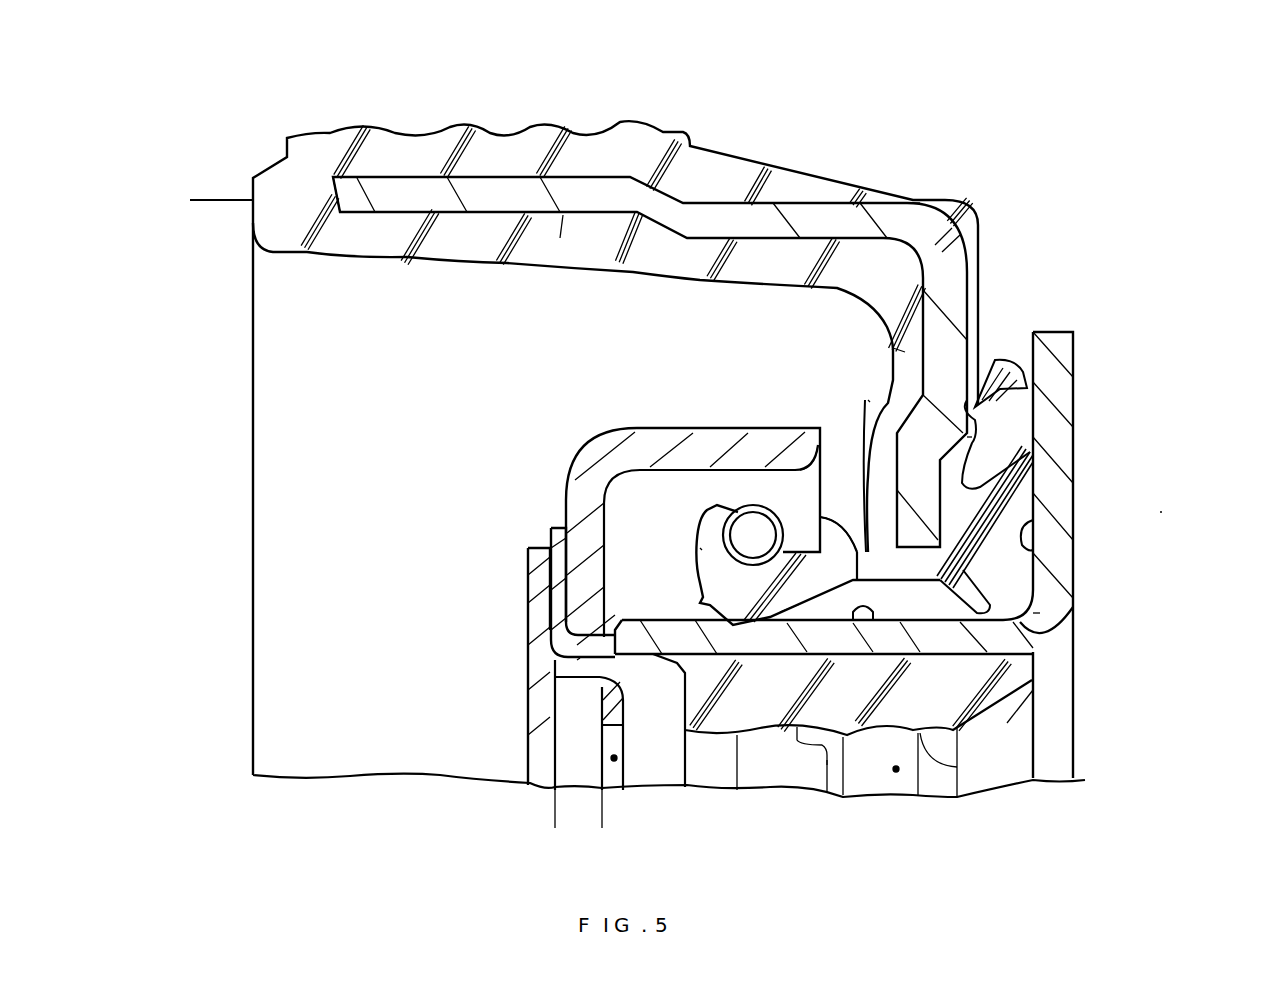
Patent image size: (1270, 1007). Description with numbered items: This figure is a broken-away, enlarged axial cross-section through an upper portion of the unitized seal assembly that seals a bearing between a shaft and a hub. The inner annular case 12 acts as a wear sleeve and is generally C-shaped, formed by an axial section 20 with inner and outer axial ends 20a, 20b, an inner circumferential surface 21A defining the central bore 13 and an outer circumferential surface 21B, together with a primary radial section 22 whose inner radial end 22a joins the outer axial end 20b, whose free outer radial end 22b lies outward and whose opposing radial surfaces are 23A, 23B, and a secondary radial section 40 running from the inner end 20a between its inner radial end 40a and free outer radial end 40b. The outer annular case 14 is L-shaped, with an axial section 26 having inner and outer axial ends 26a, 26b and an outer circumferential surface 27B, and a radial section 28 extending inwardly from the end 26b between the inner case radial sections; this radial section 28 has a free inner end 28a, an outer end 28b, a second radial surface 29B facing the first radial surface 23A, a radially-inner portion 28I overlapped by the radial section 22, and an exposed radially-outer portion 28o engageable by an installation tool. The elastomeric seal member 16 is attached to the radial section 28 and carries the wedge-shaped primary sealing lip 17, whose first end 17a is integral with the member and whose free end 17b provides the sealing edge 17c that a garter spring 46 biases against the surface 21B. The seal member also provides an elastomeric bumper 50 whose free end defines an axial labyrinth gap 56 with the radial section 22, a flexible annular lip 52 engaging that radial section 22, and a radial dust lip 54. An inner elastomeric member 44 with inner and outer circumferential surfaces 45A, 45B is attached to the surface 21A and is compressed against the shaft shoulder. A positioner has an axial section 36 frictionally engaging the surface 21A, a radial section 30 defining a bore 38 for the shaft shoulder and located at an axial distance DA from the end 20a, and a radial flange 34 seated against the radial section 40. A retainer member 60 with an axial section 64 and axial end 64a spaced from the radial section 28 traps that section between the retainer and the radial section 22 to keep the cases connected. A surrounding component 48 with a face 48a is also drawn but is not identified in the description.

The inner annular case 12 is at (1168, 512).
The central bore 13 is at (897, 772).
The outer annular case 14 is at (610, 76).
The annular elastomeric seal member 16 is at (861, 500).
The primary sealing lip 17 is at (708, 507).
The first end of primary sealing lip 17a is at (823, 518).
The second free end of primary sealing lip 17b is at (703, 555).
The inner circumferential sealing edge 17c is at (790, 622).
The axial section of inner case 20 is at (781, 660).
The inner axial end of inner case axial section 20a is at (580, 658).
The outer axial end of inner case axial section 20b is at (1035, 655).
The inner circumferential surface of inner case axial section 21A is at (827, 765).
The outer circumferential surface of inner case axial section 21B is at (853, 624).
The primary radial section of inner case 22 is at (1078, 470).
The inner radial end of primary radial section 22a is at (1062, 617).
The free outer radial end of primary radial section 22b is at (1076, 342).
The first radial surface of primary radial section 23A is at (1065, 540).
The second radial surface of primary radial section 23B is at (1078, 410).
The axial section of outer case 26 is at (522, 168).
The inner axial end of outer case axial section 26a is at (352, 214).
The outer axial end of outer case axial section 26b is at (905, 215).
The outer circumferential surface of outer case axial section 27B is at (712, 190).
The radial section of outer case 28 is at (960, 268).
The inner radial end of outer case radial section 28a is at (866, 520).
The outer radial end of outer case radial section 28b is at (945, 252).
The radially-outer portion of outer case radial section 28o is at (968, 290).
The radially-inner portion of outer case radial section 28I is at (970, 437).
The second radial surface of outer case radial section 29B is at (893, 343).
The radial section of positioner 30 is at (626, 706).
The radial flange of positioner 34 is at (526, 582).
The axial section of positioner 36 is at (573, 679).
The central bore of positioner 38 is at (616, 758).
The secondary radial section of inner case 40 is at (542, 520).
The inner radial end of secondary radial section 40a is at (578, 636).
The free outer radial end of secondary radial section 40b is at (562, 535).
The inner annular elastomeric member 44 is at (983, 710).
The inner circumferential surface of inner elastomeric member 45A is at (957, 767).
The outer circumferential surface of inner elastomeric member 45B is at (920, 622).
The garter spring 46 is at (754, 503).
The housing 48 is at (637, 124).
The housing face 48a is at (200, 208).
The annular elastomeric bumper 50 is at (1013, 348).
The annular elastomeric lip 52 is at (1030, 490).
The radial dust lip 54 is at (1002, 588).
The axial labyrinth gap 56 is at (1030, 388).
The annular retainer member 60 is at (722, 422).
The axial section of retainer member 64 is at (660, 425).
The axial end of retainer axial section 64a is at (808, 427).
The predetermined axial distance DA is at (625, 815).